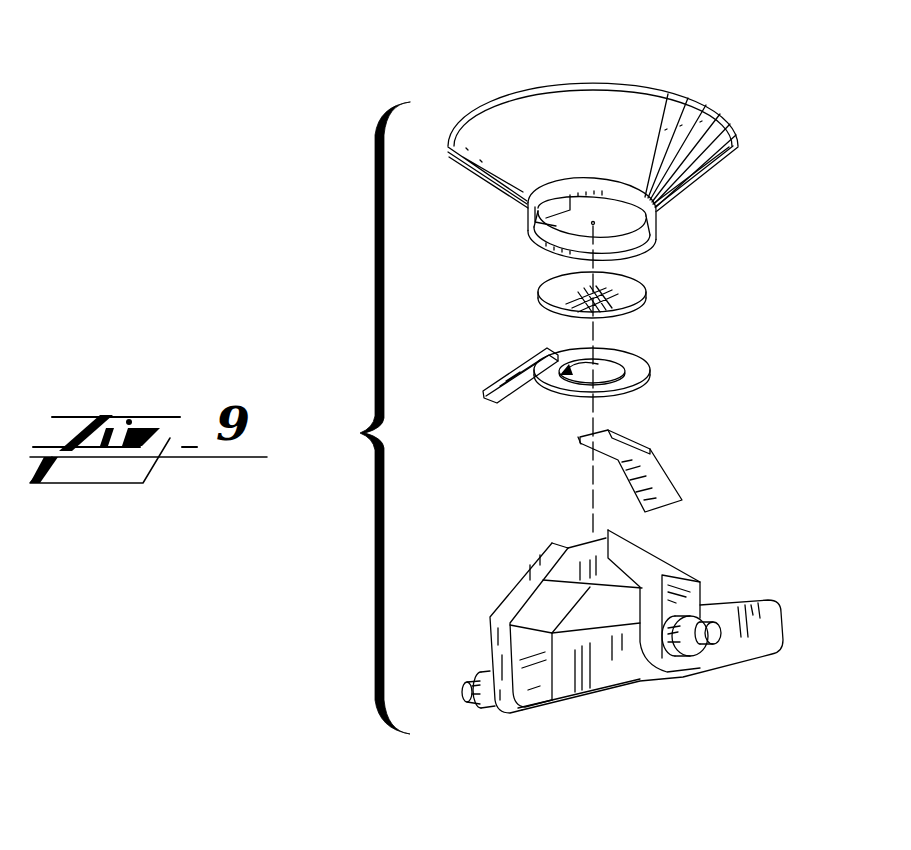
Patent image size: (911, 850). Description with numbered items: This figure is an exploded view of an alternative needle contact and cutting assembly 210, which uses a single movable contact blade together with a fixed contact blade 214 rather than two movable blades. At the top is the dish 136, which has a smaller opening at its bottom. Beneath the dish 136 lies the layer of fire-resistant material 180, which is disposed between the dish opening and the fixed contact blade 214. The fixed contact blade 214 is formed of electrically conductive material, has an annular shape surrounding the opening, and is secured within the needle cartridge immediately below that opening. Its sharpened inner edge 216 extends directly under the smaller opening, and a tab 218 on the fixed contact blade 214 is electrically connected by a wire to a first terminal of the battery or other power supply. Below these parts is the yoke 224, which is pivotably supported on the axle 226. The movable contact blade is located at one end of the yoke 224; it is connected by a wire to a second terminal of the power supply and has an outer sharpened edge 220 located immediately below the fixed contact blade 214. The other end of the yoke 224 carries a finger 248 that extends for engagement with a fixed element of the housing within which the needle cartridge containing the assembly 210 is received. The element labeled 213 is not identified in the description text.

The dish 136 is at (686, 92).
The layer of fire-resistant material 180 is at (633, 315).
The needle contact and cutting assembly 210 is at (368, 434).
The bracket 213 is at (667, 460).
The fixed contact blade 214 is at (618, 390).
The sharpened inner edge 216 is at (553, 380).
The tab 218 is at (495, 397).
The outer sharpened edge 220 is at (580, 437).
The yoke 224 is at (512, 592).
The axle 226 is at (463, 700).
The finger 248 is at (768, 600).